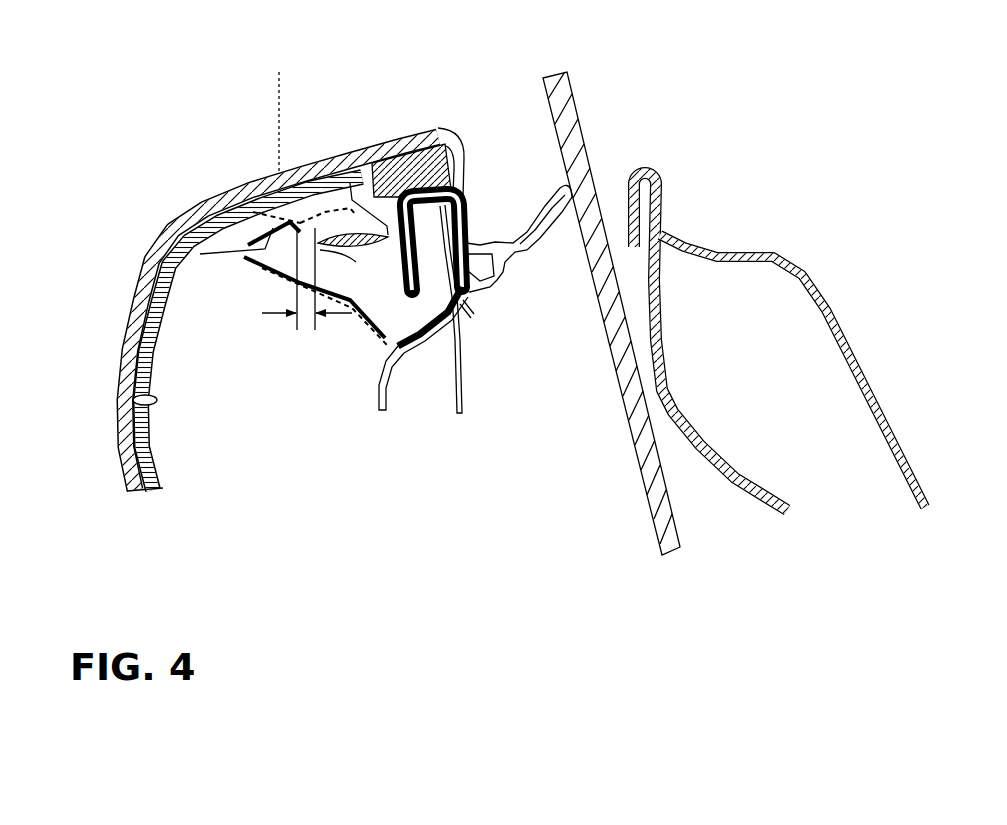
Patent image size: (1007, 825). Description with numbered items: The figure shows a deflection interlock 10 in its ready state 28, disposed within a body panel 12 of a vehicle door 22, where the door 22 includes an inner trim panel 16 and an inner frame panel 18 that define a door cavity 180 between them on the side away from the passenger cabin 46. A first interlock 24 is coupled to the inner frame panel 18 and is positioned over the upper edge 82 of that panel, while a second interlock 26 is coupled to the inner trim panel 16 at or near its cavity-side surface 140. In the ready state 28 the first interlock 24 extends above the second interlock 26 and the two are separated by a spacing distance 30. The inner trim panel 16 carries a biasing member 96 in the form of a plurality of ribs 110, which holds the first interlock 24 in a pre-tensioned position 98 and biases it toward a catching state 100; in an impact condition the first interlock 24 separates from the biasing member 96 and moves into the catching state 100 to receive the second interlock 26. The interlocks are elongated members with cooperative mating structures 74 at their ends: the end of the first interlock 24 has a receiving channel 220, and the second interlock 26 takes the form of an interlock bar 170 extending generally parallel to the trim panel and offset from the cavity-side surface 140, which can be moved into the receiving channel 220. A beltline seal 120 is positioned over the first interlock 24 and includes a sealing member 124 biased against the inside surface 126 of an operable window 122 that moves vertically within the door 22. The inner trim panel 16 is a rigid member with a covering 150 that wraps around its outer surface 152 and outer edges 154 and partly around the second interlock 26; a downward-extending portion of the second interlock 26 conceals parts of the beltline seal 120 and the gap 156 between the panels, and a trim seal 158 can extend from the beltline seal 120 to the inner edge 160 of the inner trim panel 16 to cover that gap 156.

The deflection interlock 10 is at (470, 297).
The body panel 12 is at (858, 307).
The inner trim panel 16 is at (229, 341).
The inner frame panel 18 is at (472, 360).
The door 22 is at (666, 294).
The first interlock 24 is at (327, 275).
The second interlock 26 is at (345, 220).
The ready state 28 is at (237, 302).
The spacing distance 30 is at (270, 314).
The passenger cabin 46 is at (227, 341).
The cooperative mating structures 74 is at (225, 291).
The upper edge 82 is at (462, 213).
The biasing member 96 is at (237, 307).
The pre-tensioned position 98 is at (232, 264).
The catching state 100 is at (282, 110).
The plurality of ribs 110 is at (247, 210).
The beltline seal 120 is at (523, 273).
The operable window 122 is at (611, 294).
The sealing member 124 is at (558, 220).
The inside surface 126 is at (548, 128).
The cavity-side surface 140 is at (133, 402).
The covering 150 is at (120, 372).
The outer surface 152 is at (130, 467).
The outer edges 154 is at (438, 250).
The gap 156 is at (392, 210).
The trim seal 158 is at (463, 170).
The inner edge 160 is at (452, 148).
The interlock bar 170 is at (352, 255).
The door cavity 180 is at (113, 495).
The receiving channel 220 is at (219, 333).